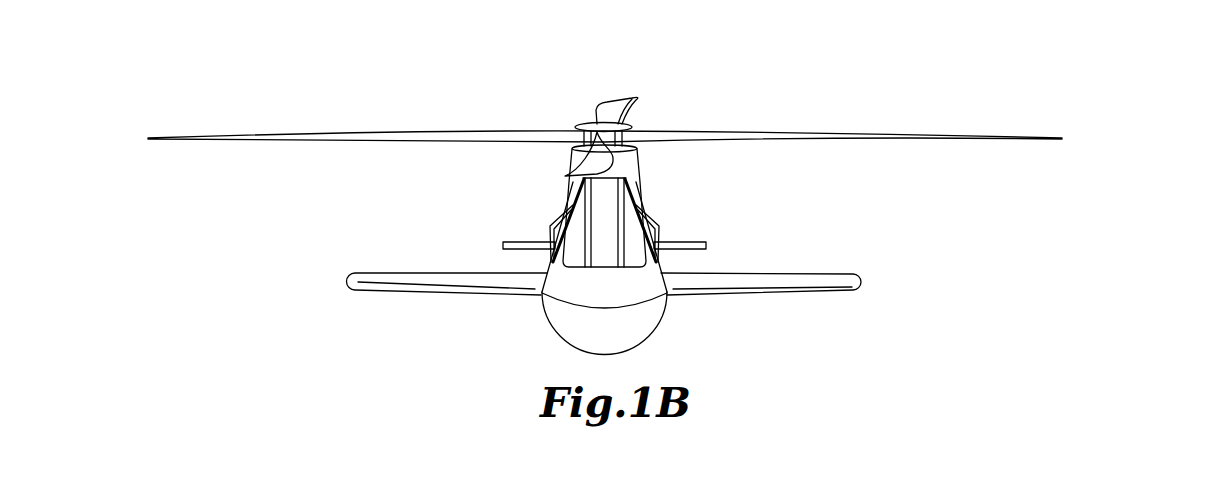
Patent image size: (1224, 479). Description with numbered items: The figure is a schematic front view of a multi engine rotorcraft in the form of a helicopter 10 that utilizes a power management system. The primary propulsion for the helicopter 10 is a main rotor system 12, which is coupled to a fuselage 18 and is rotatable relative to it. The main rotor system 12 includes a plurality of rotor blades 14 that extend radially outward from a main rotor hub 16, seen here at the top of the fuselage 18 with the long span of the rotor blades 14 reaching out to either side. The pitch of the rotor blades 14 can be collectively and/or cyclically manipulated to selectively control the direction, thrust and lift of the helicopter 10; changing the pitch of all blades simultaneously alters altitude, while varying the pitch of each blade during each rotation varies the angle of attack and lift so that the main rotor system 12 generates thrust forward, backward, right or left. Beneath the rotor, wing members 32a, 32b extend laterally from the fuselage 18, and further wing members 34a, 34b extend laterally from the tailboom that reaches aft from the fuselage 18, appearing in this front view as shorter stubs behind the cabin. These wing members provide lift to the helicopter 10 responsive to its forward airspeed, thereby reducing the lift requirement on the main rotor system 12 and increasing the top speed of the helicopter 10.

The helicopter 10 is at (756, 103).
The main rotor system 12 is at (605, 89).
The rotor blades 14 is at (312, 132).
The main rotor hub 16 is at (590, 124).
The fuselage 18 is at (646, 329).
The wing member 32a is at (812, 278).
The wing member 32b is at (396, 277).
The wing member 34a is at (688, 242).
The wing member 34b is at (520, 242).